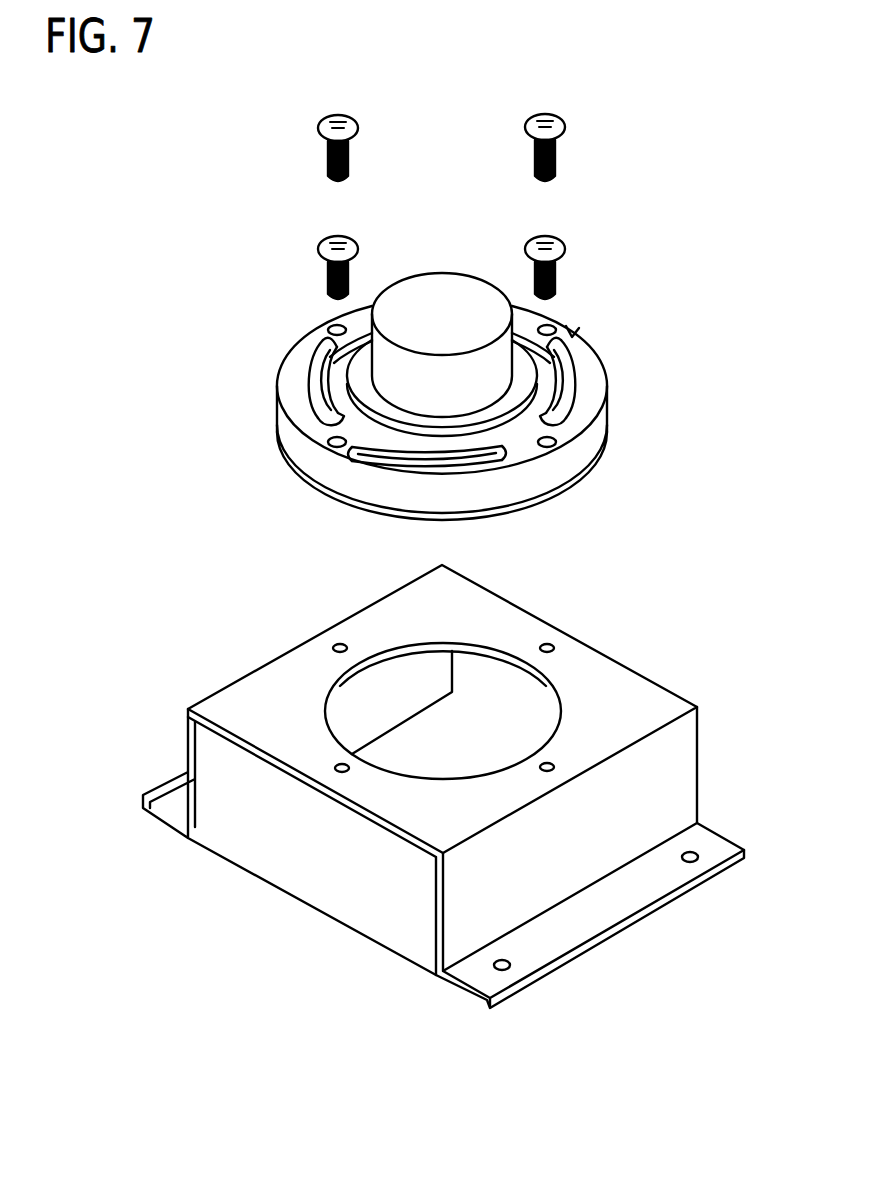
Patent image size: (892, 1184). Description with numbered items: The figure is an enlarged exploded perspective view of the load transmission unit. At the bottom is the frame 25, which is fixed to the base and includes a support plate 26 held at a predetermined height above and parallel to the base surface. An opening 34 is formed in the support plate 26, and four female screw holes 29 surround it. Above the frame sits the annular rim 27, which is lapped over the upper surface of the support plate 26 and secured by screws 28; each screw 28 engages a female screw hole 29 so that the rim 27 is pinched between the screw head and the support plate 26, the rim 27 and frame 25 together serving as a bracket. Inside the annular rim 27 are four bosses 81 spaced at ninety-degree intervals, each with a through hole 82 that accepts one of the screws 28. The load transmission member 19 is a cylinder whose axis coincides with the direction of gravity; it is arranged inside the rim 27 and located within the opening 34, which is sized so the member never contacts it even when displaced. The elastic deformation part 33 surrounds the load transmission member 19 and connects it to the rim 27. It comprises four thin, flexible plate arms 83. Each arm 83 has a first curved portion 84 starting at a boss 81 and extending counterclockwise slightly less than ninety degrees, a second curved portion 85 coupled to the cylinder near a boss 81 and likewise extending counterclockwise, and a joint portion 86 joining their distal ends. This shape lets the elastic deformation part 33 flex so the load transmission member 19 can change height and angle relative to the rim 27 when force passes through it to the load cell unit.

The load transmission member 19 is at (446, 288).
The frame 25 is at (690, 698).
The support plate 26 is at (632, 683).
The rim 27 is at (600, 388).
The screws 28 is at (328, 122).
The female screw holes 29 is at (338, 644).
The elastic deformation part 33 is at (573, 331).
The opening 34 is at (432, 765).
The bosses 81 is at (352, 322).
The through hole 82 is at (329, 324).
The arms 83 is at (300, 409).
The first curved portion 84 is at (305, 382).
The second curved portion 85 is at (336, 371).
The joint portion 86 is at (308, 420).